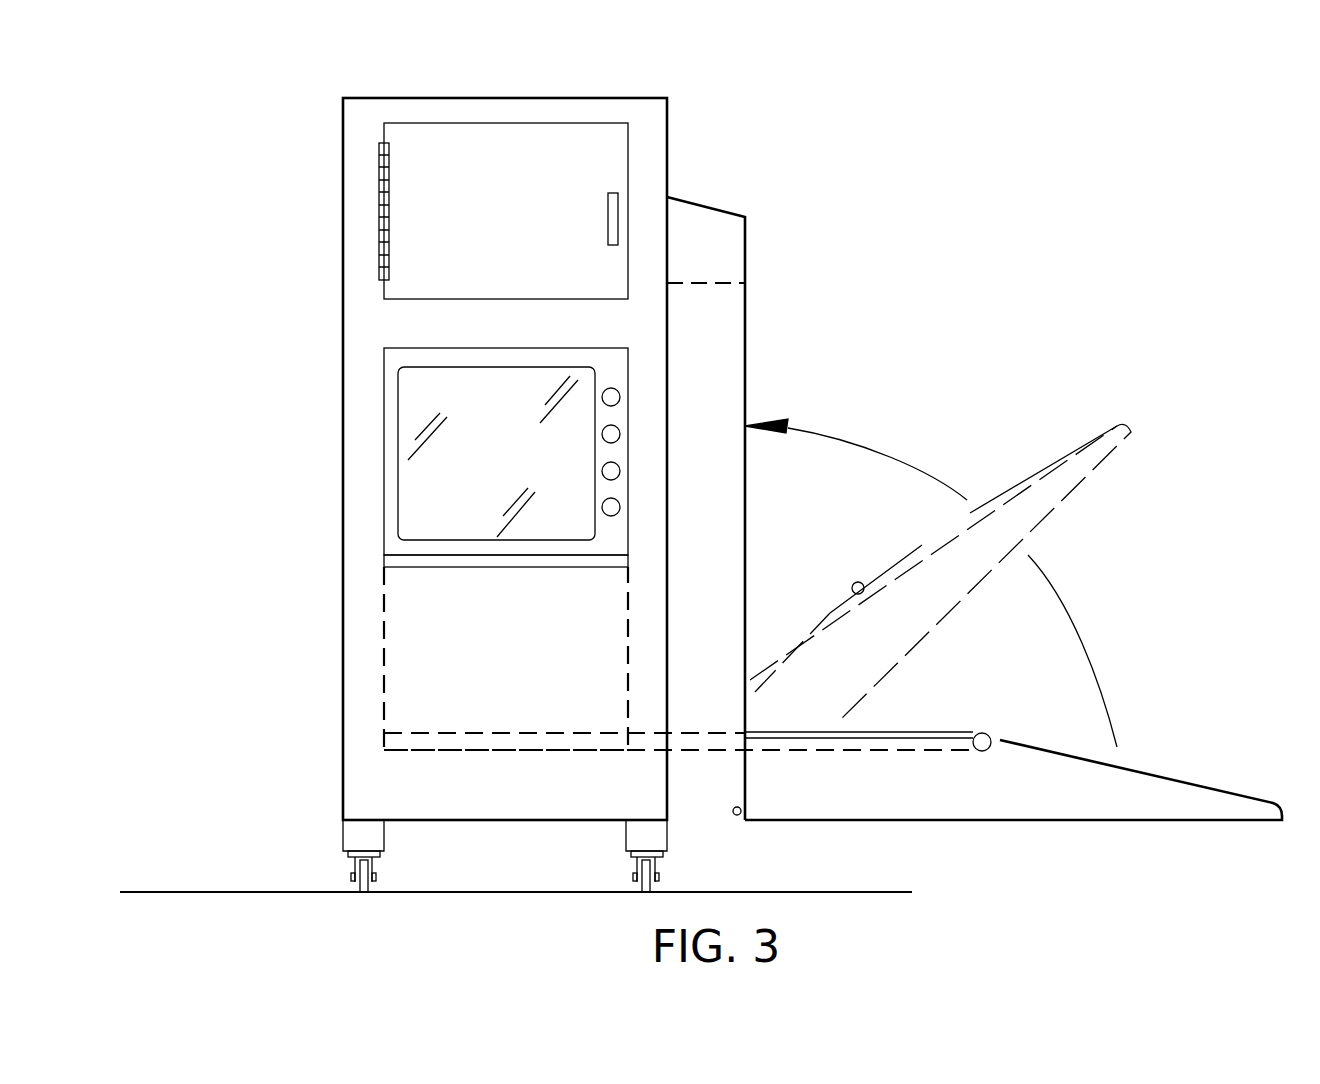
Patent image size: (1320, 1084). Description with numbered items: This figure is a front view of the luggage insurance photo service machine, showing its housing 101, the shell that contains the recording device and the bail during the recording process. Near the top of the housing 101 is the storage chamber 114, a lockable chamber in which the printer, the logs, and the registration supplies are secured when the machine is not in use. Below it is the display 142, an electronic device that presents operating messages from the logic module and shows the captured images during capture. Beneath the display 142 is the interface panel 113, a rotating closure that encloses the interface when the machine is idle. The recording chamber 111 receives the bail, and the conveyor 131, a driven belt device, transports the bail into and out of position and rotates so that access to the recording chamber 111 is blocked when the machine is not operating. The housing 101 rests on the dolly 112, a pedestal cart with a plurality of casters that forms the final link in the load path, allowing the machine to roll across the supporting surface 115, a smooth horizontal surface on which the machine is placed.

The housing 101 is at (306, 98).
The storage chamber 114 is at (558, 207).
The display 142 is at (425, 458).
The interface panel 113 is at (463, 627).
The recording chamber 111 is at (575, 633).
The conveyor 131 is at (1108, 795).
The dolly 112 is at (385, 851).
The supporting surface 115 is at (837, 892).